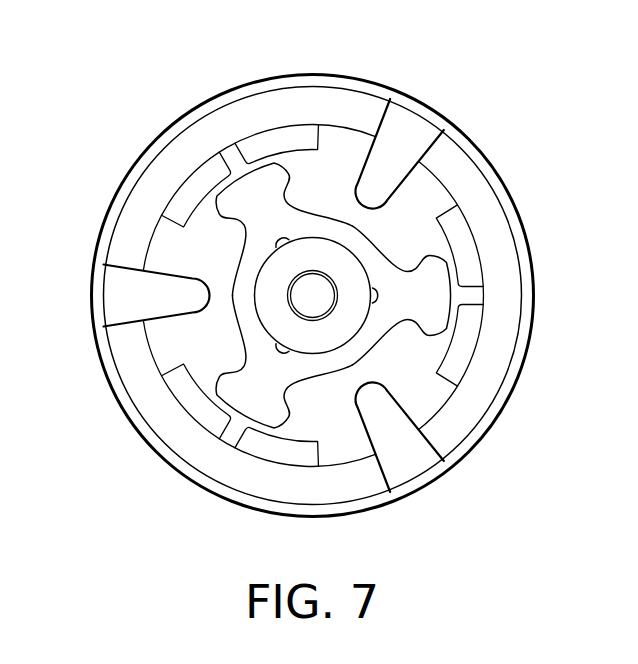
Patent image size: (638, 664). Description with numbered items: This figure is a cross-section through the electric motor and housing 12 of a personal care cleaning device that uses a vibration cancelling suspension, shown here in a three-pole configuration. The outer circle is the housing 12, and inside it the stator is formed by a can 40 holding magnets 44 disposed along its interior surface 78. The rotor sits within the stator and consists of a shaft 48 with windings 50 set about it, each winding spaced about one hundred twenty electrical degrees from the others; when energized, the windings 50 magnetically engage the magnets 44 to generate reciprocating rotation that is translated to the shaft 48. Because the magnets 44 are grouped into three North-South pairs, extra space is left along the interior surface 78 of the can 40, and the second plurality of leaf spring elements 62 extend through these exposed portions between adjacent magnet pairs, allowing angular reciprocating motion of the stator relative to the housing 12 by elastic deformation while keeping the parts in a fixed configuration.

The housing 12 is at (295, 73).
The can 40 is at (143, 368).
The magnets 44 is at (473, 267).
The shaft 48 is at (301, 305).
The windings 50 is at (223, 188).
The second plurality of leaf spring elements 62 is at (411, 122).
The interior surface 78 is at (354, 126).